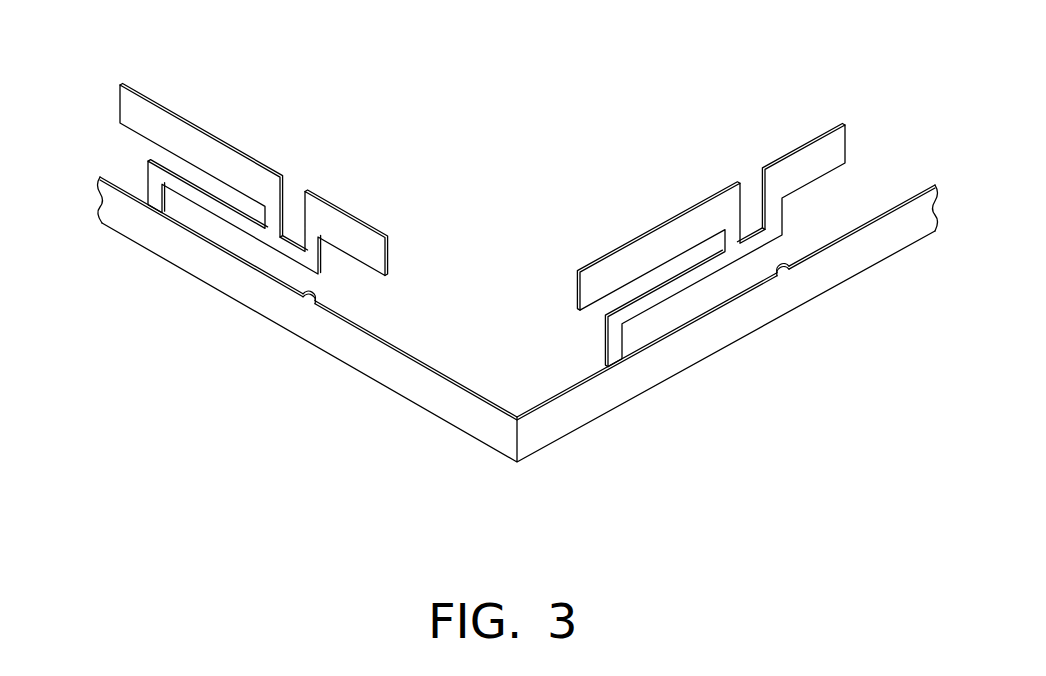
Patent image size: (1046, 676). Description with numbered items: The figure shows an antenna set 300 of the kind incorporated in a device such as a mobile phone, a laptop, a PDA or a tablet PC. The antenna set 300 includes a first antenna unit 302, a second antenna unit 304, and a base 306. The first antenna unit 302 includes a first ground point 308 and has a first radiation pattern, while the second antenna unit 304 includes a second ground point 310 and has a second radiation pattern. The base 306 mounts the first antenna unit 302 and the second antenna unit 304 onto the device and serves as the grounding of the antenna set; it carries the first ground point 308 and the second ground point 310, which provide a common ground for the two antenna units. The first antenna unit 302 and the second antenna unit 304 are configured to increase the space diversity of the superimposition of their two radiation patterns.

The antenna set 300 is at (510, 188).
The first antenna unit 302 is at (110, 112).
The second antenna unit 304 is at (868, 132).
The base 306 is at (487, 432).
The first ground point 308 is at (309, 301).
The second ground point 310 is at (787, 270).